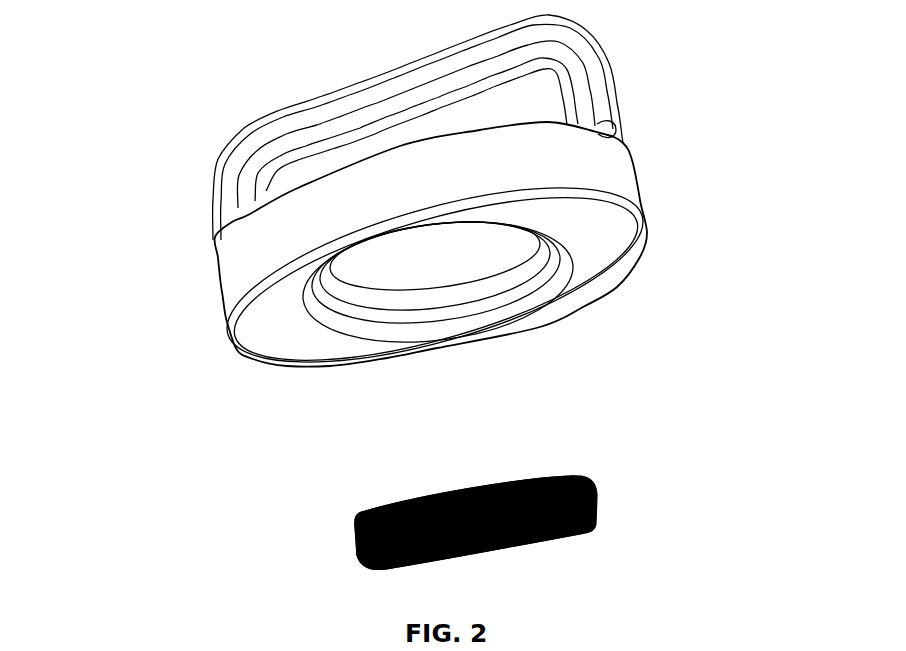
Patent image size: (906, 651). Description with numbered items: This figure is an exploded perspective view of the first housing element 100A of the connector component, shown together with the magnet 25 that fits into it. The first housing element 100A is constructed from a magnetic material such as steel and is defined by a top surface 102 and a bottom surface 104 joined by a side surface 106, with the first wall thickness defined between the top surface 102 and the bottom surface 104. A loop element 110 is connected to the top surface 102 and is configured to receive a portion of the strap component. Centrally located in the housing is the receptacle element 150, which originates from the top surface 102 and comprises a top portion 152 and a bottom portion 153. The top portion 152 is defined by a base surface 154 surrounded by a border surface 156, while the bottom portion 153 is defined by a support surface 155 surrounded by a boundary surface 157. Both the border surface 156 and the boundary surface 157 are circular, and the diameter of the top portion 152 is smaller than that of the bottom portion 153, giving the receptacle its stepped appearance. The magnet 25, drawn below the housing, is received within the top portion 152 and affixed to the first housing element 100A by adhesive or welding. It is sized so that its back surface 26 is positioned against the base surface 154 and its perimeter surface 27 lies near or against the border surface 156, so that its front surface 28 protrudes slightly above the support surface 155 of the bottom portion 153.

The first housing element 100A is at (193, 128).
The top surface 102 is at (547, 123).
The bottom surface 104 is at (618, 250).
The side surface 106 is at (253, 243).
The loop element 110 is at (403, 100).
The receptacle element 150 is at (463, 293).
The top portion 152 is at (413, 268).
The bottom portion 153 is at (377, 338).
The base surface 154 is at (448, 245).
The support surface 155 is at (323, 292).
The border surface 156 is at (500, 277).
The boundary surface 157 is at (340, 325).
The magnet 25 is at (355, 547).
The back surface 26 is at (533, 478).
The perimeter surface 27 is at (597, 507).
The front surface 28 is at (533, 548).